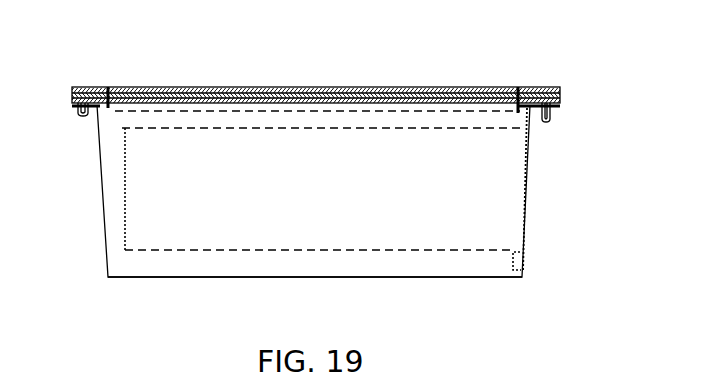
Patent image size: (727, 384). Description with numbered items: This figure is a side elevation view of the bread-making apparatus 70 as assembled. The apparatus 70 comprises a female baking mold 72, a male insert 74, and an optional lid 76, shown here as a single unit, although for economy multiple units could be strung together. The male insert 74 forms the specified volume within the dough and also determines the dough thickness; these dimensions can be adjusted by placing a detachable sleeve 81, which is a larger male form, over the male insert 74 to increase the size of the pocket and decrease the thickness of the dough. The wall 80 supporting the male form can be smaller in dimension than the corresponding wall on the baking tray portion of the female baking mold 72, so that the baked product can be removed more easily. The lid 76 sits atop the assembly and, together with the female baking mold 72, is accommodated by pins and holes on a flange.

The apparatus 70 is at (572, 168).
The female baking mold 72 is at (338, 278).
The male insert 74 is at (485, 207).
The lid 76 is at (335, 76).
The wall 80 is at (523, 267).
The detachable sleeve 81 is at (148, 188).